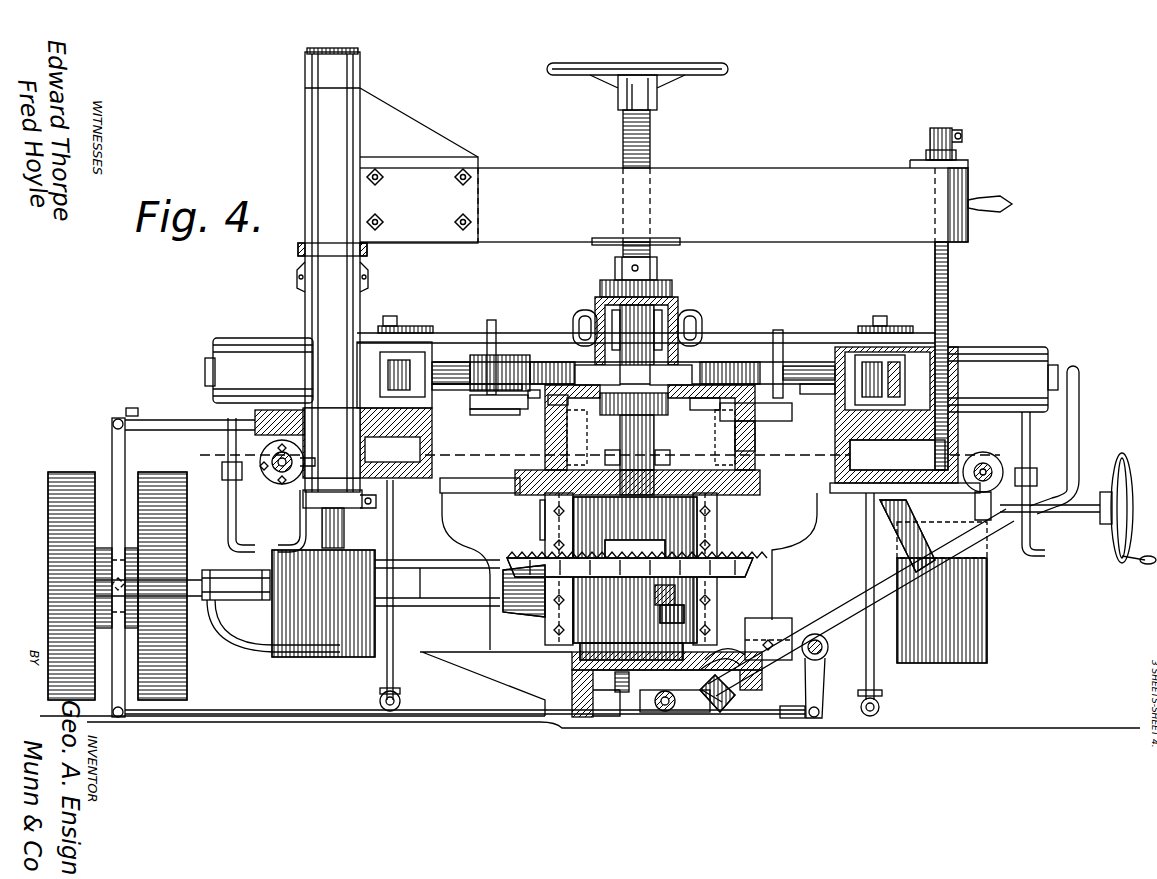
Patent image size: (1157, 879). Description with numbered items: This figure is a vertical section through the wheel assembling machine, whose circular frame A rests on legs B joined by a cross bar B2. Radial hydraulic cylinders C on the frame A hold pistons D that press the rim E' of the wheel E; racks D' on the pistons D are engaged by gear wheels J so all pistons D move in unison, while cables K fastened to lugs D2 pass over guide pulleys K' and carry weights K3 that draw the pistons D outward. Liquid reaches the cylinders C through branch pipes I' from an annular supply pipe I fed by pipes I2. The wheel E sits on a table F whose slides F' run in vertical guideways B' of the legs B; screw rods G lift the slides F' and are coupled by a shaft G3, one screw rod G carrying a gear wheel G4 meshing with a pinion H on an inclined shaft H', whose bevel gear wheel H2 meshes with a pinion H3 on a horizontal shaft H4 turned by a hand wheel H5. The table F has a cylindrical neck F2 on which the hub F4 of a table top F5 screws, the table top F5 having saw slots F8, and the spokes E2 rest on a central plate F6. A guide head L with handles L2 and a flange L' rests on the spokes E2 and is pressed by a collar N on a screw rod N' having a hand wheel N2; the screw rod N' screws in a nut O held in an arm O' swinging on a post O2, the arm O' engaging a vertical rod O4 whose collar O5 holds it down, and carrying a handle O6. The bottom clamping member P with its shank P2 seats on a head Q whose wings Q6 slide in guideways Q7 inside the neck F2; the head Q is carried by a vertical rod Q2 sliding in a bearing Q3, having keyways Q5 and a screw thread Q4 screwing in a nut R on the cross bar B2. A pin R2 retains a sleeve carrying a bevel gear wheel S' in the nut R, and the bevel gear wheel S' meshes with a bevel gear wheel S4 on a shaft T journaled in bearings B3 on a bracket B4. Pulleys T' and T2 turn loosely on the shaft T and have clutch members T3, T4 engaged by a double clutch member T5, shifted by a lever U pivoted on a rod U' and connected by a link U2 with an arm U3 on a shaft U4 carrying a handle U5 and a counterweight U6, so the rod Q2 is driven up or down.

The arm O' is at (662, 165).
The post O2 is at (332, 320).
The nut O is at (636, 228).
The vertical rod O4 is at (950, 272).
The collar O5 is at (930, 136).
The handle O6 is at (990, 200).
The hand wheel N2 is at (627, 86).
The screw rod N' is at (657, 183).
The collar N is at (620, 265).
The guide head L is at (643, 284).
The handles L2 is at (700, 322).
The flange L' is at (671, 374).
The shank P2 is at (596, 305).
The bottom clamping member P is at (634, 431).
The rope or cable K is at (652, 324).
The guide pulley K' is at (647, 315).
The weight K3 is at (330, 550).
The cylinder C is at (247, 352).
The circular frame A is at (617, 417).
The gear wheel J is at (398, 372).
The wheel E is at (633, 349).
The rim E' is at (500, 353).
The spokes E2 is at (548, 360).
The piston D is at (809, 345).
The rack D' is at (633, 397).
The lug D2 is at (778, 330).
The table F is at (478, 412).
The slide F' is at (539, 520).
The cylindrical neck F2 is at (745, 445).
The hub F4 is at (715, 420).
The table top F5 is at (495, 423).
The central apertured plate F6 is at (597, 372).
The slot F8 is at (504, 404).
The head Q is at (575, 455).
The vertical rod Q2 is at (614, 459).
The bearing Q3 is at (656, 484).
The screw thread Q4 is at (615, 695).
The keyway Q5 is at (538, 413).
The wing Q6 is at (572, 430).
The guideway Q7 is at (663, 461).
The pinion H is at (725, 701).
The inclined shaft H' is at (858, 605).
The bevel gear wheel H2 is at (880, 525).
The pinion H3 is at (897, 453).
The horizontally-disposed shaft H4 is at (1077, 513).
The hand wheel H5 is at (1122, 455).
The annular supply pipe I is at (629, 473).
The branch pipe I' is at (626, 484).
The pipe I2 is at (394, 520).
The shifting lever U is at (127, 567).
The rod U' is at (190, 410).
The link U2 is at (330, 709).
The arm U3 is at (822, 698).
The shaft U4 is at (812, 635).
The handle U5 is at (1080, 400).
The counterweight U6 is at (762, 618).
The shaft T is at (437, 573).
The pulley T' is at (163, 570).
The pulley T2 is at (78, 475).
The clutch member T3 is at (138, 560).
The clutch member T4 is at (97, 560).
The double clutch member T5 is at (130, 582).
The leg B is at (618, 604).
The vertical guideway B' is at (644, 569).
The cross bar B2 is at (588, 712).
The bearing B3 is at (232, 569).
The bracket B4 is at (252, 636).
The bevel gear wheel S' is at (637, 554).
The bevel gear wheel S4 is at (520, 612).
The nut R is at (635, 570).
The pin R2 is at (690, 612).
The screw rod G is at (700, 598).
The shaft G3 is at (665, 712).
The gear wheel G4 is at (712, 712).